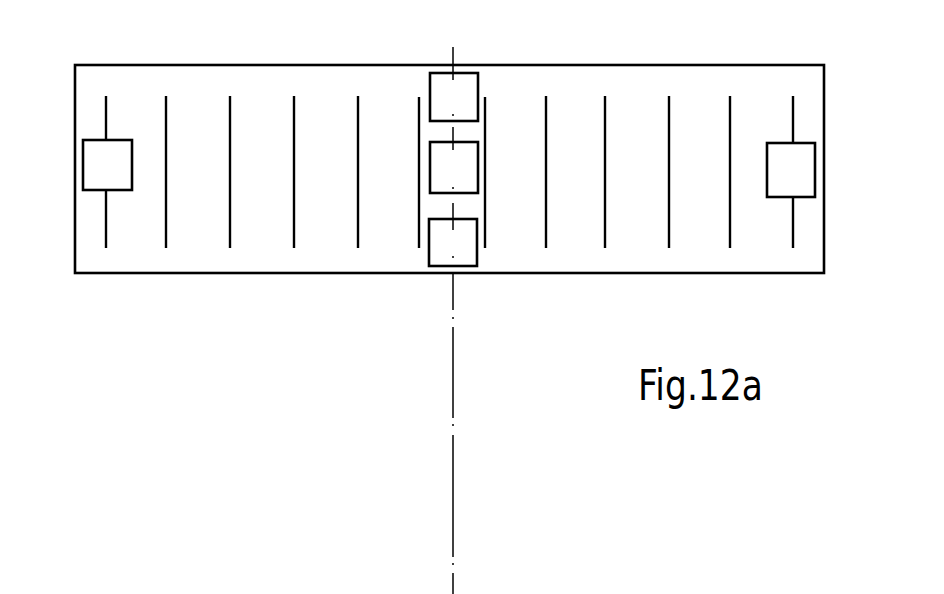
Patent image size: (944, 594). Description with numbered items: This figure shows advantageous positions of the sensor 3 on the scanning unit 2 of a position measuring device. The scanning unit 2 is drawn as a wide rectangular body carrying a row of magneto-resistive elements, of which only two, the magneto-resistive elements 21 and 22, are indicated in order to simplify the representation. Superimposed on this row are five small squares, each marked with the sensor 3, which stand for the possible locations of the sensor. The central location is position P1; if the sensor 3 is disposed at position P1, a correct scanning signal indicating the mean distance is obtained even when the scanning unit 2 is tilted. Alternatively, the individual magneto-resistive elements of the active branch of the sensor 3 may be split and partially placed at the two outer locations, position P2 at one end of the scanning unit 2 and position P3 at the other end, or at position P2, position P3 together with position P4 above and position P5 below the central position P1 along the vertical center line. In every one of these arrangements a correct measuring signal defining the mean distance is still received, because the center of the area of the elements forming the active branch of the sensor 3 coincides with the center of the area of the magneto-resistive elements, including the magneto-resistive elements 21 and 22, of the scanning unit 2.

The scanning unit 2 is at (769, 77).
The magneto-resistive element 21 is at (603, 125).
The magneto-resistive element 22 is at (667, 128).
The sensor 3 is at (451, 172).
The position P1 is at (438, 167).
The position P2 is at (92, 152).
The position P3 is at (806, 154).
The position P4 is at (466, 83).
The position P5 is at (440, 258).